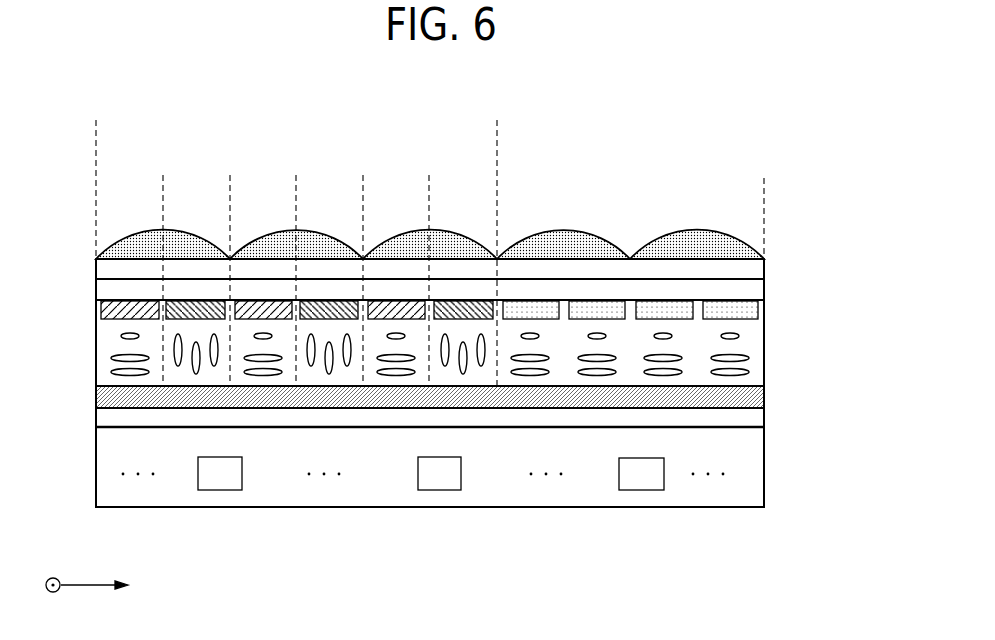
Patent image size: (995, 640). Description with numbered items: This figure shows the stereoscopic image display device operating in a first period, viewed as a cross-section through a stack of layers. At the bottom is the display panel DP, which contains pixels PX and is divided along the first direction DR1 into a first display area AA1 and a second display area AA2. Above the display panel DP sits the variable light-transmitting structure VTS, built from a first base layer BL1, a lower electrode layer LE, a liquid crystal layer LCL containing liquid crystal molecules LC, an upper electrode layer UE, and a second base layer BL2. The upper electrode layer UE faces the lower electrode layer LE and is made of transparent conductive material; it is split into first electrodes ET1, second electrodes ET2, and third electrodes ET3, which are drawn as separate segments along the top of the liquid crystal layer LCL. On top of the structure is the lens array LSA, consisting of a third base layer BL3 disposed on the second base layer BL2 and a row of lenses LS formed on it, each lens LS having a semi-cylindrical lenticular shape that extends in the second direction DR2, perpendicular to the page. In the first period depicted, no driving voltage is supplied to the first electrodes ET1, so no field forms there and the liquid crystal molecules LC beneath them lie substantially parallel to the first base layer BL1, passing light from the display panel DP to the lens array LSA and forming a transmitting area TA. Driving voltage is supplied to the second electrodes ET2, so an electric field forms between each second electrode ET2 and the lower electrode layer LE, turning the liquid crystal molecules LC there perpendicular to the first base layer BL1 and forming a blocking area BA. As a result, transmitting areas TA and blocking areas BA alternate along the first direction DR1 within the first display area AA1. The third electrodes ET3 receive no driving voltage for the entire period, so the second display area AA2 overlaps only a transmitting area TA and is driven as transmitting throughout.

The lens LS is at (752, 238).
The lens array LSA is at (485, 256).
The third base layer BL3 is at (753, 268).
The second base layer BL2 is at (756, 289).
The first base layer BL1 is at (463, 421).
The variable light-transmitting structure VTS is at (451, 353).
The liquid crystal layer LCL is at (430, 329).
The liquid crystal molecules LC is at (98, 368).
The lower electrode layer LE is at (756, 396).
The first electrode ET1 is at (102, 307).
The second electrode ET2 is at (188, 302).
The third electrode ET3 is at (617, 320).
The upper electrode layer UE is at (602, 552).
The display panel DP is at (460, 467).
The pixel PX is at (431, 473).
The first display area AA1 is at (497, 133).
The second display area AA2 is at (630, 172).
The transmitting area TA is at (163, 187).
The blocking area BA is at (230, 187).
The first direction DR1 is at (113, 585).
The second direction DR2 is at (54, 571).